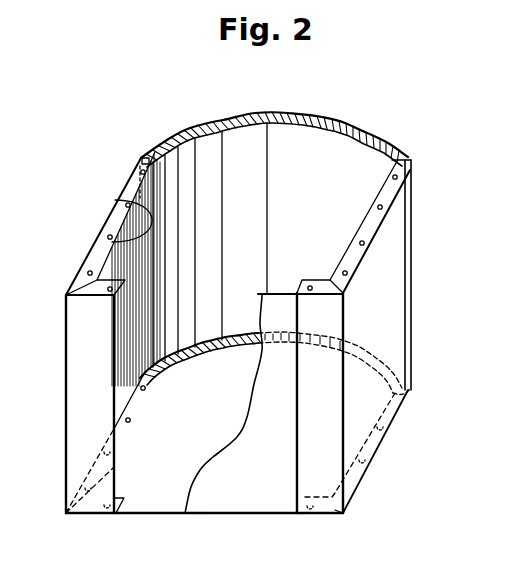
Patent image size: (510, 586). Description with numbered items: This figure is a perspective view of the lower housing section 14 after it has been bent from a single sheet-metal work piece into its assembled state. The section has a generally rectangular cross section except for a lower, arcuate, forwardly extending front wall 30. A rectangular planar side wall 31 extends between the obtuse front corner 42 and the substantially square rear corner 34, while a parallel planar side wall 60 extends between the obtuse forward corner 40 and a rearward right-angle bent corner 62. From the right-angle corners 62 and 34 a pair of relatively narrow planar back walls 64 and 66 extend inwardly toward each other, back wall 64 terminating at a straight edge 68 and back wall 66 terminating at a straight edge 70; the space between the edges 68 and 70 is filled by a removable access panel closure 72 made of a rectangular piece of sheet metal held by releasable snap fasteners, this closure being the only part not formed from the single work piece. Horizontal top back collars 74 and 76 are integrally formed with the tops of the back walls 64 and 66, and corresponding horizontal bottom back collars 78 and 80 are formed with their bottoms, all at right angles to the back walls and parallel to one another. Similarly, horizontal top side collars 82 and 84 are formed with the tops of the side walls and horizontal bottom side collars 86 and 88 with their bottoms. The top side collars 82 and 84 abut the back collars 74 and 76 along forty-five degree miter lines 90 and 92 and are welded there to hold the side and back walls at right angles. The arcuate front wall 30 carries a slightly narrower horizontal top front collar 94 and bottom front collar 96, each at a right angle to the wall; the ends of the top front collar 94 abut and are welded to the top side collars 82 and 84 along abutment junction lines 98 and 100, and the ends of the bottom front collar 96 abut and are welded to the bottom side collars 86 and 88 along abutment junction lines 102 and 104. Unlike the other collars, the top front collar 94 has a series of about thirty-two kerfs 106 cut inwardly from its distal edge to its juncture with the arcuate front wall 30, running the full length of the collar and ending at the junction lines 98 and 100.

The lower housing section 14 is at (136, 142).
The arcuate front wall 30 is at (317, 165).
The side wall 31 is at (108, 258).
The rear corner 34 is at (66, 350).
The front corner 40 is at (413, 233).
The front corner 42 is at (122, 205).
The side wall 60 is at (388, 298).
The rear corner 62 is at (355, 372).
The back wall 64 is at (325, 437).
The back wall 66 is at (82, 411).
The straight edge 68 is at (293, 463).
The straight edge 70 is at (117, 473).
The access panel closure 72 is at (267, 500).
The top back collar 74 is at (323, 297).
The top back collar 76 is at (100, 290).
The bottom back collar 78 is at (325, 513).
The bottom back collar 80 is at (90, 515).
The top side collar 82 is at (368, 232).
The top side collar 84 is at (128, 183).
The bottom side collar 86 is at (365, 462).
The bottom side collar 88 is at (90, 470).
The miter line 90 is at (345, 277).
The miter line 92 is at (98, 284).
The top front collar 94 is at (262, 112).
The bottom front collar 96 is at (228, 342).
The abutment junction line 98 is at (408, 158).
The abutment junction line 100 is at (143, 160).
The abutment junction line 102 is at (410, 388).
The abutment junction line 104 is at (143, 382).
The kerfs 106 is at (193, 125).